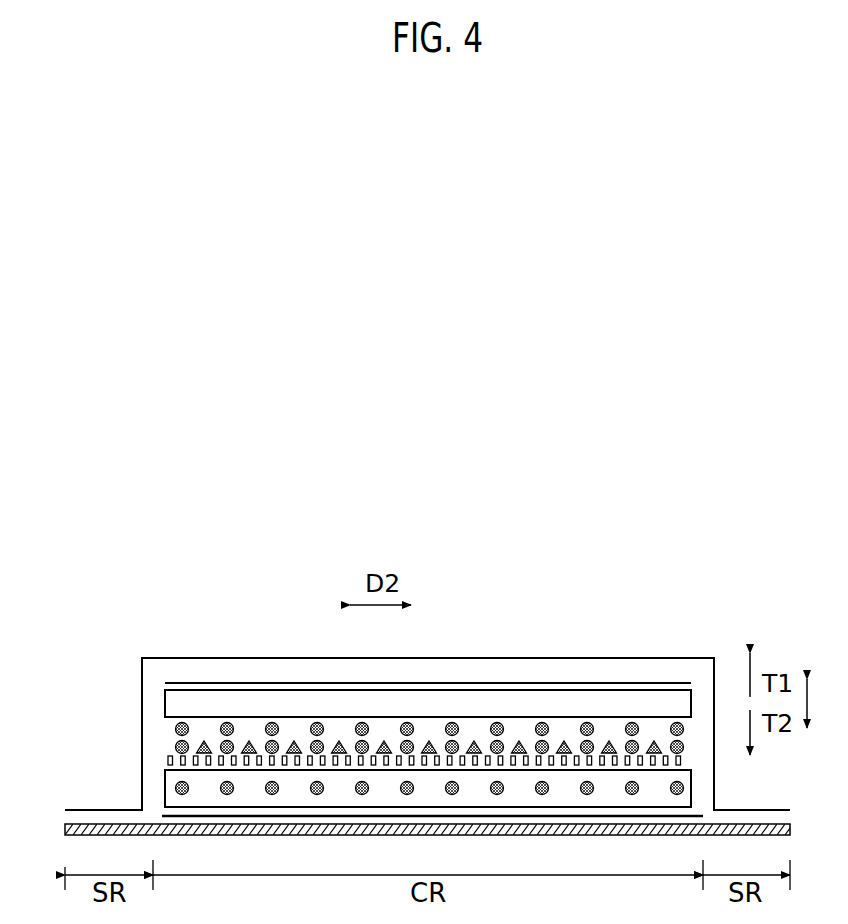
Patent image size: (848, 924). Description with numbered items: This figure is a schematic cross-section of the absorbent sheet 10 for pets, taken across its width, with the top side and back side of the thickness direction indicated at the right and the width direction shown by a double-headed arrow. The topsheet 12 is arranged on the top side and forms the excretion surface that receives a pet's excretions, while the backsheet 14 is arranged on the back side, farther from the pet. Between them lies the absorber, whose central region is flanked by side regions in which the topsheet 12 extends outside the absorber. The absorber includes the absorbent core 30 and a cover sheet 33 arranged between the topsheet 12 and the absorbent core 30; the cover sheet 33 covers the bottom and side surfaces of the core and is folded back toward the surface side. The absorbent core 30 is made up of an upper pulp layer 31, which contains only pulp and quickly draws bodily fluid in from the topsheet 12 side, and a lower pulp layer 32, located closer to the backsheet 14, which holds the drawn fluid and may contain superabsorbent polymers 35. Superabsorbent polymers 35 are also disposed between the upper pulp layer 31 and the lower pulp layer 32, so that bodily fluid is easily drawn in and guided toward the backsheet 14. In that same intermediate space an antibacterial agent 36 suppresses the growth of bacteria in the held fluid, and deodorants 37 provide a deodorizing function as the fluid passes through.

The absorbent sheet for pets 10 is at (649, 620).
The topsheet 12 is at (428, 658).
The backsheet 14 is at (64, 828).
The absorbent core 30 is at (424, 685).
The upper pulp layer 31 is at (198, 702).
The lower pulp layer 32 is at (242, 782).
The cover sheet 33 is at (438, 815).
The superabsorbent polymers 35 is at (633, 748).
The antibacterial agent 36 is at (572, 750).
The deodorants 37 is at (428, 748).